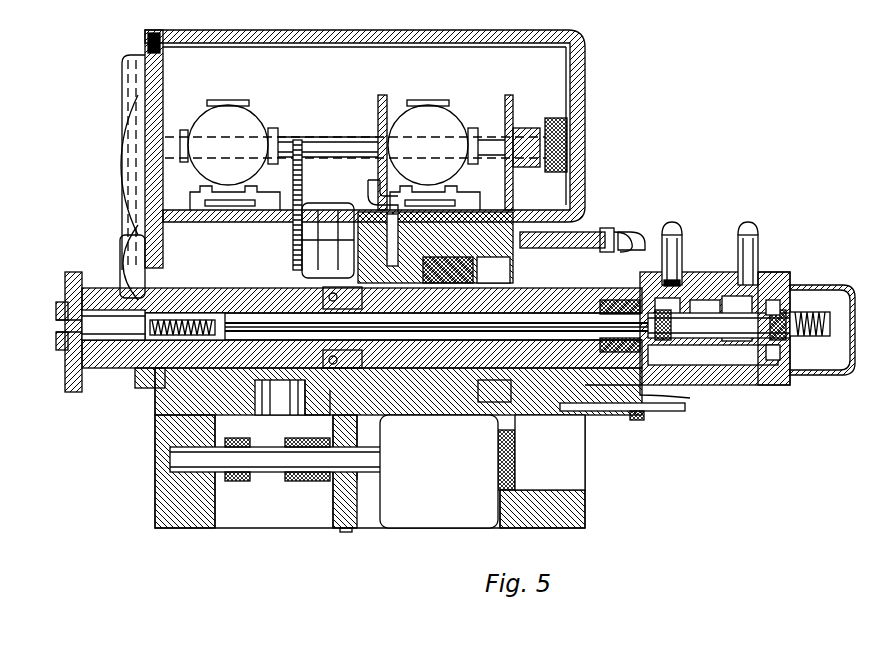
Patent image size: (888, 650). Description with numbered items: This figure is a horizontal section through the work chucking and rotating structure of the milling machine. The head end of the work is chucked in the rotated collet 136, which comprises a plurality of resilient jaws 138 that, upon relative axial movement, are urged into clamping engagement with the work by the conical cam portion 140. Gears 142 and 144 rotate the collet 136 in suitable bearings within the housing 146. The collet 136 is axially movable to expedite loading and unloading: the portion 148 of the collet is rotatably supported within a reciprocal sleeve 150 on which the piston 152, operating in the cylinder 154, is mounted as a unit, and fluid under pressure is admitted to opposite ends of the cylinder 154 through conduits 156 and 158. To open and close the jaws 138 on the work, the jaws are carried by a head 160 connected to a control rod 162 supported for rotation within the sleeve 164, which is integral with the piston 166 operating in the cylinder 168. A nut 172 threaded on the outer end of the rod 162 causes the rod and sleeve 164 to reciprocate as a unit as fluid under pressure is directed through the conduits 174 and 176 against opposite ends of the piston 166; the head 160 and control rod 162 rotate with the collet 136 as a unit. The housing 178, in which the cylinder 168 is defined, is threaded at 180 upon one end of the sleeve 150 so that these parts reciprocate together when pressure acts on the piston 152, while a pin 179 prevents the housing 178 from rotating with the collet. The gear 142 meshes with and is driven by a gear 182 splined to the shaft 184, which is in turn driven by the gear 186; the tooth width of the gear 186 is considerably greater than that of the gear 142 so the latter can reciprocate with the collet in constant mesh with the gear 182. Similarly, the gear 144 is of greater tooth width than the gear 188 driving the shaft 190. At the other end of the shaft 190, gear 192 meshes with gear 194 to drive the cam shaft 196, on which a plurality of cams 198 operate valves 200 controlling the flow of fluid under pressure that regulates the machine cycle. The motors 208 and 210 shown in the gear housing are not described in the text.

The collet 136 is at (68, 392).
The resilient jaws 138 is at (56, 310).
The conical cam portion 140 is at (112, 270).
The gear 142 is at (260, 404).
The gear 144 is at (322, 392).
The housing 146 is at (162, 416).
The portion of the collet 148 is at (492, 348).
The reciprocal sleeve 150 is at (340, 290).
The piston 152 is at (444, 414).
The cylinder 154 is at (482, 272).
The conduit 156 is at (368, 186).
The conduit 158 is at (620, 228).
The head 160 is at (146, 368).
The control rod 162 is at (544, 416).
The sleeve 164 is at (778, 274).
The piston 166 is at (712, 272).
The cylinder 168 is at (660, 411).
The nut 172 is at (848, 290).
The conduit 174 is at (684, 236).
The conduit 176 is at (756, 242).
The housing 178 is at (686, 280).
The pin 179 is at (612, 416).
The threaded connection 180 is at (648, 266).
The gear 182 is at (250, 472).
The shaft 184 is at (280, 484).
The gear 186 is at (352, 530).
The gear 188 is at (316, 220).
The shaft 190 is at (298, 256).
The gear 192 is at (106, 205).
The gear 194 is at (116, 114).
The cam shaft 196 is at (334, 136).
The cams 198 is at (384, 98).
The valves 200 is at (520, 198).
The motor 208 is at (232, 112).
The motor 210 is at (446, 122).